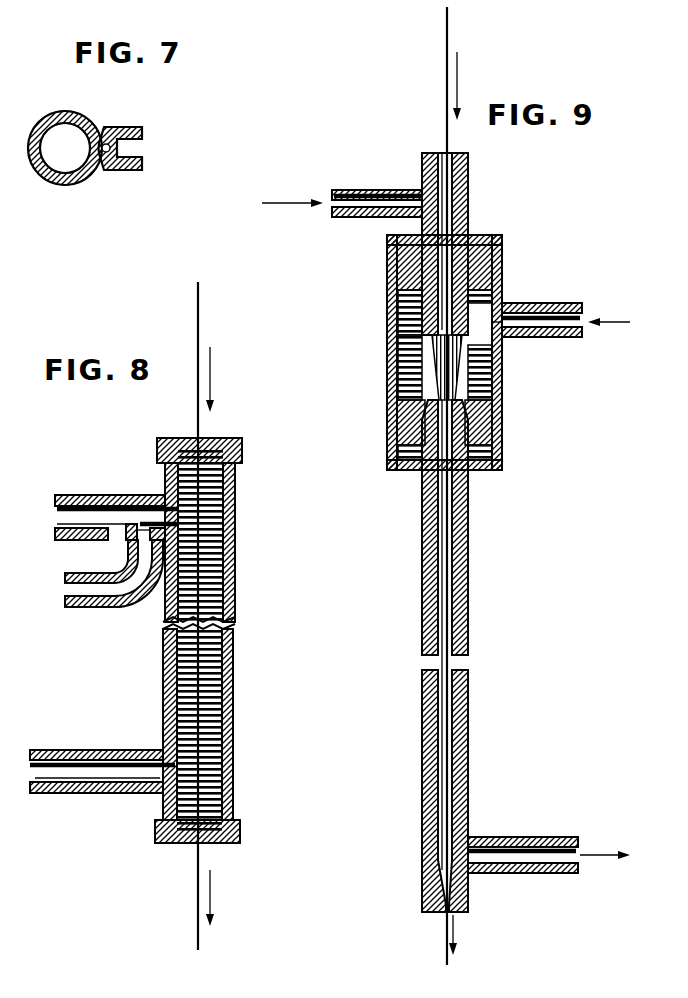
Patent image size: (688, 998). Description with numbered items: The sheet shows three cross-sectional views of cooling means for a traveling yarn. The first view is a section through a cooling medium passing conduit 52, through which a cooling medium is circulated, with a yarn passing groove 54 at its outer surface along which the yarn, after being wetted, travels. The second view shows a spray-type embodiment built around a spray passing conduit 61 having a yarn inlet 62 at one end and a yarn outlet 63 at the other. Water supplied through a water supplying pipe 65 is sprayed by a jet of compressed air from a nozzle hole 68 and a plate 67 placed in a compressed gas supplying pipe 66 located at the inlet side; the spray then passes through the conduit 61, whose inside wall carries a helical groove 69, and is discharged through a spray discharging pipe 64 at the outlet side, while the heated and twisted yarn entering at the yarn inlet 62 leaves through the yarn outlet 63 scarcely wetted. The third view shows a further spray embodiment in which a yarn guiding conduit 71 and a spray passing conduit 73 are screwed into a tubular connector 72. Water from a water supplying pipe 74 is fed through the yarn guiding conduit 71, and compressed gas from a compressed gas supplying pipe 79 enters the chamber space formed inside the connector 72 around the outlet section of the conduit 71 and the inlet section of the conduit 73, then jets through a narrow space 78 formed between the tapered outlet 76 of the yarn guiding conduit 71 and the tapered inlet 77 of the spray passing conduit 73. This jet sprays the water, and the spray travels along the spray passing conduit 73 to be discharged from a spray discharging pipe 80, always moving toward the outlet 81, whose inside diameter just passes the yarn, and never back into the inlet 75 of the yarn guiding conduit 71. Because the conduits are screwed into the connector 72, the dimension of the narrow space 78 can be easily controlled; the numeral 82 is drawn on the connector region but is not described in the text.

In FIG. 7, the cooling medium passing conduit 52 is at (64, 116).
In FIG. 7, the yarn passing groove 54 is at (122, 151).
In FIG. 8, the spray passing conduit 61 is at (215, 642).
In FIG. 8, the yarn inlet 62 is at (190, 438).
In FIG. 8, the yarn outlet 63 is at (188, 843).
In FIG. 8, the spray discharging pipe 64 is at (89, 774).
In FIG. 8, the water supplying pipe 65 is at (110, 607).
In FIG. 8, the compressed gas supplying pipe 66 is at (66, 495).
In FIG. 8, the plate 67 is at (137, 495).
In FIG. 8, the nozzle hole 68 is at (120, 523).
In FIG. 8, the helical groove 69 is at (212, 700).
In FIG. 9, the yarn guiding conduit 71 is at (469, 186).
In FIG. 9, the tubular connector 72 is at (445, 352).
In FIG. 9, the spray passing conduit 73 is at (470, 553).
In FIG. 9, the water supplying pipe 74 is at (379, 188).
In FIG. 9, the inlet of the yarn guiding conduit 75 is at (440, 153).
In FIG. 9, the outlet of the yarn guiding conduit 76 is at (393, 340).
In FIG. 9, the inlet of the spray passing conduit 77 is at (390, 378).
In FIG. 9, the narrow space 78 is at (464, 358).
In FIG. 9, the compressed gas supplying pipe 79 is at (537, 303).
In FIG. 9, the spray discharging pipe 80 is at (485, 837).
In FIG. 9, the outlet of the spray passing conduit 81 is at (442, 915).
In FIG. 9, the gland 82 is at (502, 286).